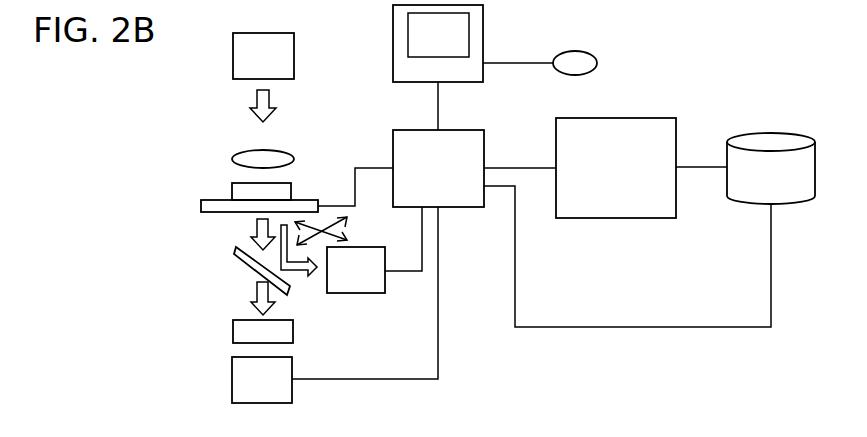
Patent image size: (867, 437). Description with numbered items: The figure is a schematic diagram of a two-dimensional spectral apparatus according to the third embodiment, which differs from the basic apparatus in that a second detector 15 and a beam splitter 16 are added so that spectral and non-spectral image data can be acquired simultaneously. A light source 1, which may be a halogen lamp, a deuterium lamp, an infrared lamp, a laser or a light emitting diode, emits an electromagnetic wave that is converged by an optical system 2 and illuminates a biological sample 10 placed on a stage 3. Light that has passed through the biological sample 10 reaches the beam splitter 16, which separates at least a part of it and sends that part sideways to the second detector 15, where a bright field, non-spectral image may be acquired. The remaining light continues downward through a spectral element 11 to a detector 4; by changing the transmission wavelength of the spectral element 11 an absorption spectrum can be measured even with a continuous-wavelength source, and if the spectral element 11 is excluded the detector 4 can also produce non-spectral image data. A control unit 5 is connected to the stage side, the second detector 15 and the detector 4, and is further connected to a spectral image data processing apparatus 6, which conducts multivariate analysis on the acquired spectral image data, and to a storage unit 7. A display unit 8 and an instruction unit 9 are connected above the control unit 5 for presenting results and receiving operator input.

The light source 1 is at (239, 56).
The optical system 2 is at (233, 161).
The stage 3 is at (212, 212).
The detector 4 is at (282, 369).
The control unit 5 is at (472, 208).
The spectral image data processing apparatus 6 is at (623, 218).
The storage unit 7 is at (773, 132).
The display unit 8 is at (477, 24).
The instruction unit 9 is at (588, 63).
The biological sample 10 is at (233, 192).
The spectral element 11 is at (288, 330).
The second detector 15 is at (380, 287).
The beam splitter 16 is at (248, 257).